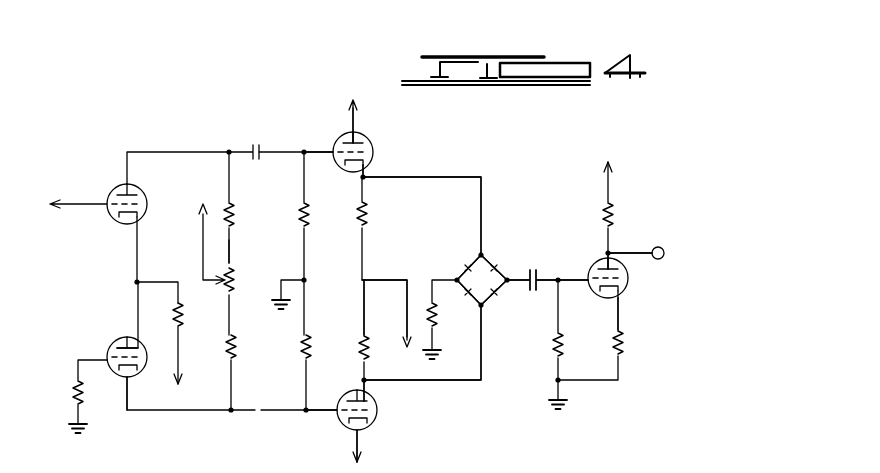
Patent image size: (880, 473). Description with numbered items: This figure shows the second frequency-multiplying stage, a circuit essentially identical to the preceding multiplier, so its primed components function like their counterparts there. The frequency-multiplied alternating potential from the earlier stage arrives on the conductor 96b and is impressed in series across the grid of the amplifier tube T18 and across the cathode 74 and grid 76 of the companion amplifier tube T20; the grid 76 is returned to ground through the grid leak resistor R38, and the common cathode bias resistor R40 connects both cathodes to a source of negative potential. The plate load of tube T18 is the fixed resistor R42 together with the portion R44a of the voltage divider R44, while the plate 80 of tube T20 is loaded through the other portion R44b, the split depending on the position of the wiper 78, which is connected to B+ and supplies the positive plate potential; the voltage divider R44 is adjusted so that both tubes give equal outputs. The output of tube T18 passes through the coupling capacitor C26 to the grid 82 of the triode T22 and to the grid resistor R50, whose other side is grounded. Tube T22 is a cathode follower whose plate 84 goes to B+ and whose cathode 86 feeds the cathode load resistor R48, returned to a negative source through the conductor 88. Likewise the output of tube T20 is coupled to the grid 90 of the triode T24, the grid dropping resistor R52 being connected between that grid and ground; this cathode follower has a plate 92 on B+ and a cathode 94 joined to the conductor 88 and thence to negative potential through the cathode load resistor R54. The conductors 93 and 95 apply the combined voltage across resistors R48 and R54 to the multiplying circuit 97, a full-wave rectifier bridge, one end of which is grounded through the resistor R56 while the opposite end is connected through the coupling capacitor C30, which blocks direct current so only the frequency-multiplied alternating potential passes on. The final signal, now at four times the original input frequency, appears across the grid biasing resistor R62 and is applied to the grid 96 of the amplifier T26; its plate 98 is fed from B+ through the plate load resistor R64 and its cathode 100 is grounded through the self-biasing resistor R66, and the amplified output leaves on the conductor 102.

The amplifier tube T18 is at (118, 187).
The conductor 96b is at (78, 204).
The wiper 78 is at (213, 280).
The amplifier tube T20 is at (114, 338).
The cathode 74 is at (118, 345).
The grid 76 is at (106, 360).
The grid leak resistor R38 is at (76, 393).
The plate 80 is at (122, 386).
The coupling capacitor C26 is at (257, 145).
The grid 82 is at (332, 152).
The plate 84 is at (350, 134).
The triode T22 is at (370, 146).
The cathode 86 is at (360, 173).
The fixed resistor R42 is at (236, 214).
The portion of voltage divider R44a is at (233, 268).
The voltage divider R44 is at (246, 284).
The common cathode bias resistor R40 is at (204, 311).
The portion of voltage divider R44b is at (243, 285).
The grid resistor R50 is at (310, 219).
The grid dropping resistor R52 is at (342, 326).
The cathode load resistor R48 is at (368, 218).
The conductor 88 is at (396, 276).
The conductor 93 is at (446, 177).
The multiplying circuit 97 is at (481, 255).
The coupling capacitor C30 is at (533, 268).
The cathode 94 is at (362, 375).
The cathode load resistor R54 is at (368, 354).
The resistor R56 is at (436, 325).
The grid 90 is at (340, 415).
The triode T24 is at (376, 408).
The plate 92 is at (366, 430).
The conductor 95 is at (481, 383).
The grid biasing resistor R62 is at (553, 350).
The plate load resistor R64 is at (612, 210).
The grid 96 is at (590, 278).
The plate 98 is at (612, 264).
The conductor 102 is at (656, 248).
The amplifier T26 is at (630, 280).
The self-biasing resistor R66 is at (624, 340).
The cathode 100 is at (612, 301).